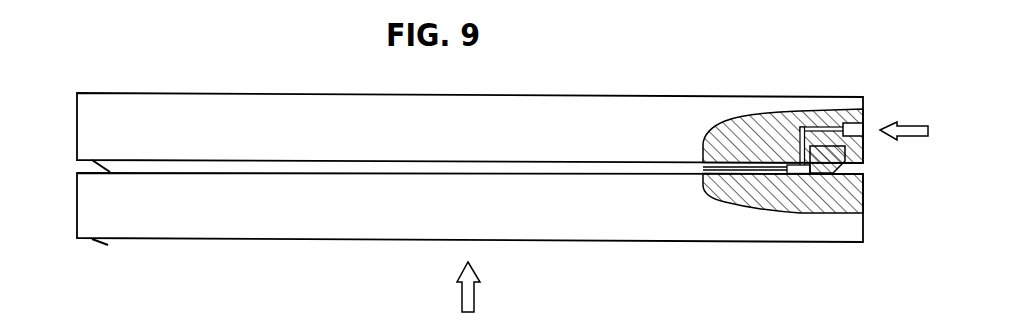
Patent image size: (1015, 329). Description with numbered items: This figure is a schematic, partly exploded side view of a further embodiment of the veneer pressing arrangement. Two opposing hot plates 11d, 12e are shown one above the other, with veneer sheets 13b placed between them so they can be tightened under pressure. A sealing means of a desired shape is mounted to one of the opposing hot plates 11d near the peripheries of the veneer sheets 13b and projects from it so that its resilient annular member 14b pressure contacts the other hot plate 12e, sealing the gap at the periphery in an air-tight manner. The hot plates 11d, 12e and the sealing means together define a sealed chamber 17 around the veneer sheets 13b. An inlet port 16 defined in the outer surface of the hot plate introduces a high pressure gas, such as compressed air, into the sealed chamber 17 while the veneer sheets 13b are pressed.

The hot plate 11d is at (640, 118).
The hot plate 12e is at (623, 212).
The veneer sheets 13b is at (752, 163).
The resilient annular member 14b is at (845, 169).
The inlet port 16 is at (863, 130).
The sealed chamber 17 is at (800, 170).